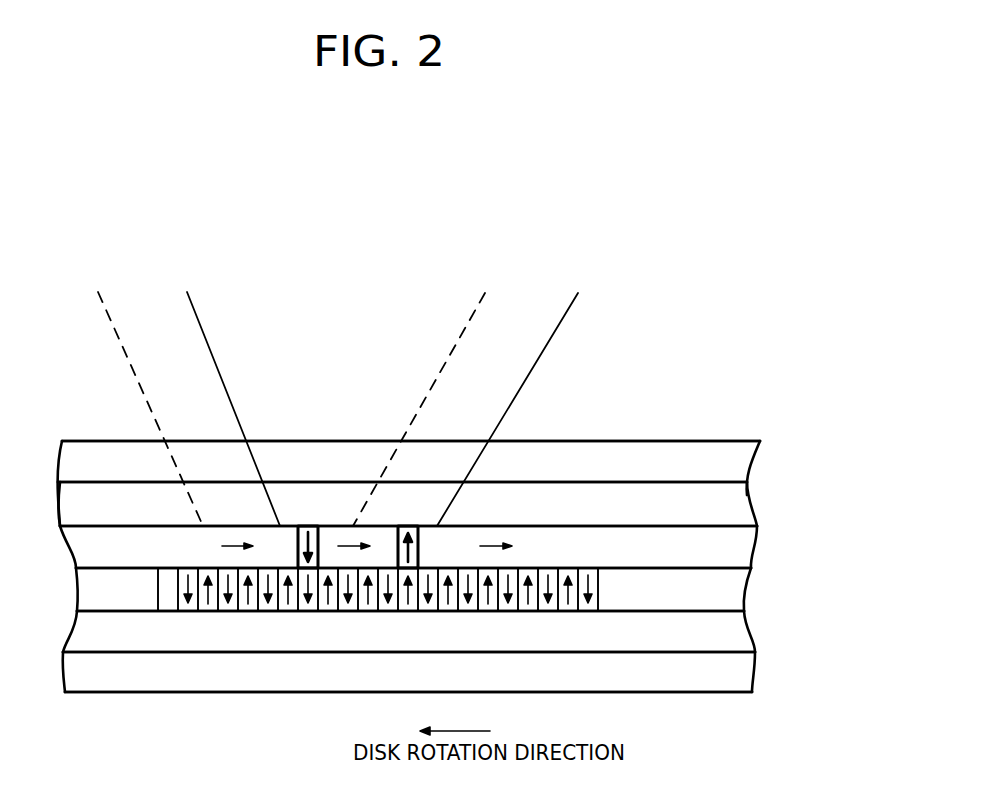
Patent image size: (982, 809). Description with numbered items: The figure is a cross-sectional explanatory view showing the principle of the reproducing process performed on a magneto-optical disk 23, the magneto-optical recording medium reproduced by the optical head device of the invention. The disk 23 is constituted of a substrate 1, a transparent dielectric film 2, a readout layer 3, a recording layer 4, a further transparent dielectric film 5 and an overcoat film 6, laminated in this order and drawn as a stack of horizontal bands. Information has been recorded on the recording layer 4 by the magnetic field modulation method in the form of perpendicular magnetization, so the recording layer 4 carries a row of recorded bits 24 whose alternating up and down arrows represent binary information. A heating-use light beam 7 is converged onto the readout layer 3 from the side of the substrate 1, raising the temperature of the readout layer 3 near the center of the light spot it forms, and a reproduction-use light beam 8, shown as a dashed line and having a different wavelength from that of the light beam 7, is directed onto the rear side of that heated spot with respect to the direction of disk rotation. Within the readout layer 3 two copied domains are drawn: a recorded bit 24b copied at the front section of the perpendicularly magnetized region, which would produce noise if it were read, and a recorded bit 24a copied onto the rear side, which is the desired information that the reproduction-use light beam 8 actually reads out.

The substrate 1 is at (745, 462).
The transparent dielectric film 2 is at (745, 503).
The readout layer 3 is at (745, 546).
The recording layer 4 is at (745, 590).
The transparent dielectric film 5 is at (745, 630).
The overcoat film 6 is at (745, 672).
The light beam 7 is at (561, 323).
The reproduction-use light beam 8 is at (465, 330).
The magneto-optical disk 23 is at (708, 422).
The recorded bits 24 is at (230, 611).
The recorded bit 24a is at (308, 526).
The recorded bit 24b is at (406, 526).